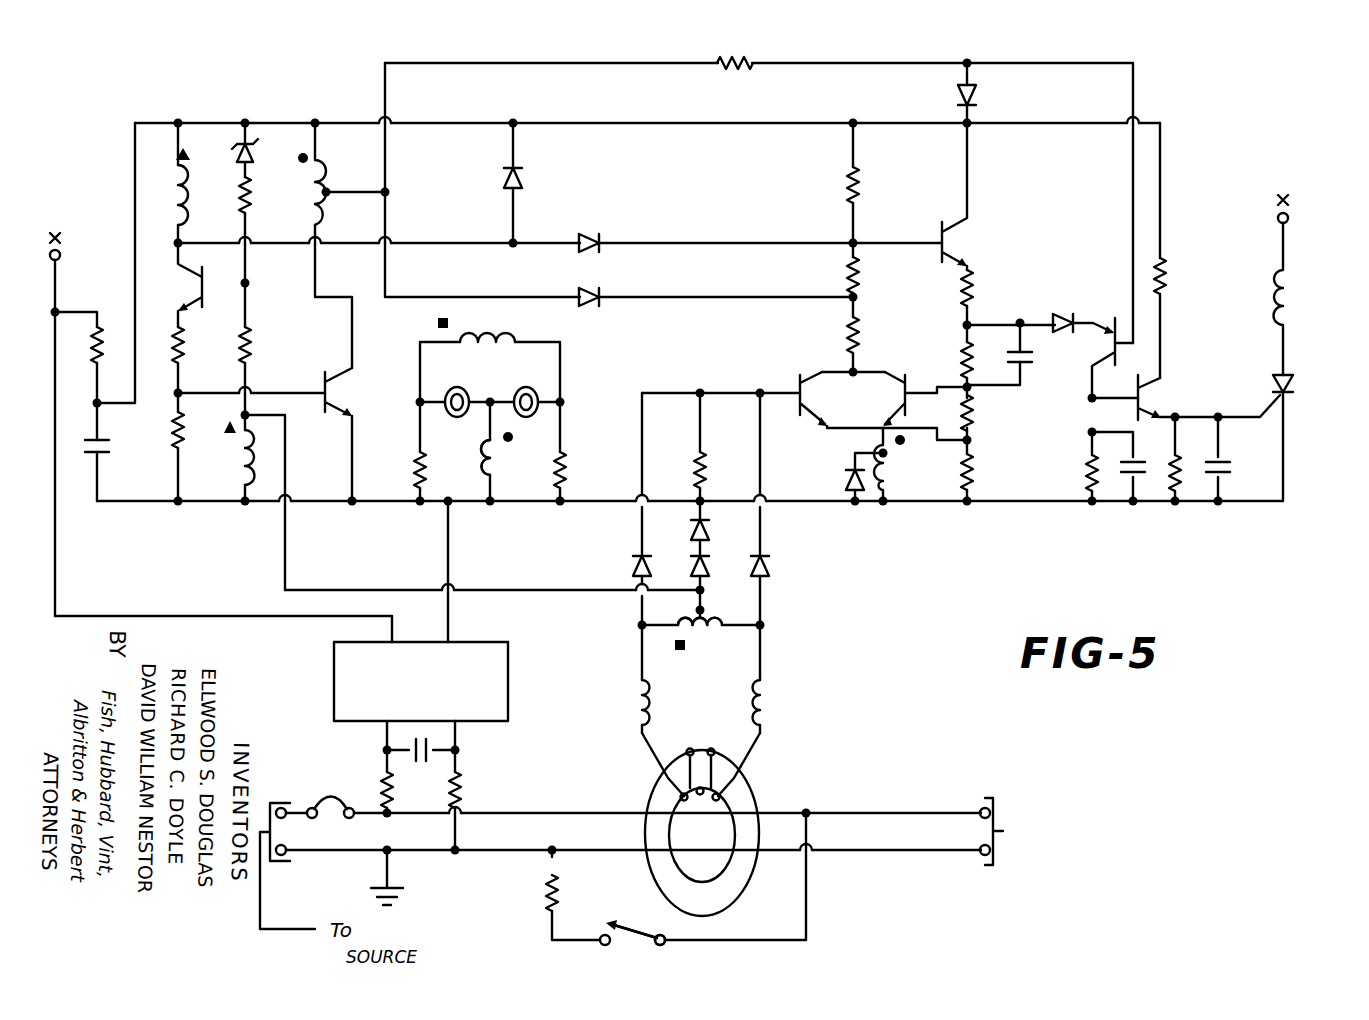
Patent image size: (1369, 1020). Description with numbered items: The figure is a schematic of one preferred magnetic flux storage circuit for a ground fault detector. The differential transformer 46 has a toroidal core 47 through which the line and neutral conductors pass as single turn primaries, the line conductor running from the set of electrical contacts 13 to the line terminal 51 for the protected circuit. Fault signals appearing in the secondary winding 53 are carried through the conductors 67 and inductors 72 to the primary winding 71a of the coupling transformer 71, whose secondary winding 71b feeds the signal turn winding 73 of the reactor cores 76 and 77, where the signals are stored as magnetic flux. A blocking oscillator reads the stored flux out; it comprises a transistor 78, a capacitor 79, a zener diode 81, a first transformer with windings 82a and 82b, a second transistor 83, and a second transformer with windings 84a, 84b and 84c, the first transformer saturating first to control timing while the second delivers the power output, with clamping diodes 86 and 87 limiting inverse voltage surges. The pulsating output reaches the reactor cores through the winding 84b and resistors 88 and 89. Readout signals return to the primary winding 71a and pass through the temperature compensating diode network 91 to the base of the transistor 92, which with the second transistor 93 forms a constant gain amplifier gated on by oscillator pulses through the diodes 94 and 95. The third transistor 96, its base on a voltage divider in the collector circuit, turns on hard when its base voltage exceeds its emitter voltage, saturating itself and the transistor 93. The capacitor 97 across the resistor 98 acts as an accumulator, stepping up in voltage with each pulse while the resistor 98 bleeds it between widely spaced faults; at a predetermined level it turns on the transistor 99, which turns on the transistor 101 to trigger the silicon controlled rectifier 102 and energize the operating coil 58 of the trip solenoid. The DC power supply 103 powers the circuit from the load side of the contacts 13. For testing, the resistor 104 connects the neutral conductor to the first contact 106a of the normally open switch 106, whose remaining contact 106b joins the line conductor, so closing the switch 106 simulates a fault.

The set of electrical contacts 13 is at (350, 796).
The differential transformer 46 is at (772, 806).
The toroidal core 47 is at (736, 889).
The line terminal 51 is at (979, 808).
The secondary winding 53 is at (712, 749).
The operating coil 58 is at (1272, 313).
The conductors 67 is at (652, 756).
The coupling transformer 71 is at (728, 616).
The primary winding 71a is at (700, 638).
The secondary winding 71b is at (497, 334).
The inductors 72 is at (634, 700).
The signal turn winding 73 is at (478, 414).
The reactor core 76 is at (460, 387).
The reactor core 77 is at (544, 388).
The transistor 78 is at (186, 284).
The capacitor 79 is at (105, 442).
The zener diode 81 is at (256, 152).
The winding 82a is at (192, 205).
The winding 82b is at (238, 458).
The second transistor 83 is at (350, 390).
The winding 84a is at (329, 183).
The winding 84b is at (495, 462).
The winding 84c is at (894, 465).
The clamping diode 86 is at (524, 184).
The clamping diode 87 is at (847, 473).
The resistor 88 is at (413, 466).
The resistor 89 is at (566, 470).
The temperature compensating diode network 91 is at (680, 536).
The transistor 92 is at (806, 368).
The second transistor 93 is at (960, 246).
The diode 94 is at (600, 290).
The diode 95 is at (595, 233).
The third transistor 96 is at (919, 370).
The capacitor 97 is at (1045, 358).
The resistor 98 is at (960, 352).
The transistor 99 is at (1112, 326).
The transistor 101 is at (1157, 399).
The silicon controlled rectifier 102 is at (1300, 382).
The DC power supply 103 is at (486, 652).
The resistor 104 is at (545, 895).
The normally open switch 106 is at (634, 947).
The first contact 106a is at (598, 934).
The remaining contact 106b is at (668, 946).